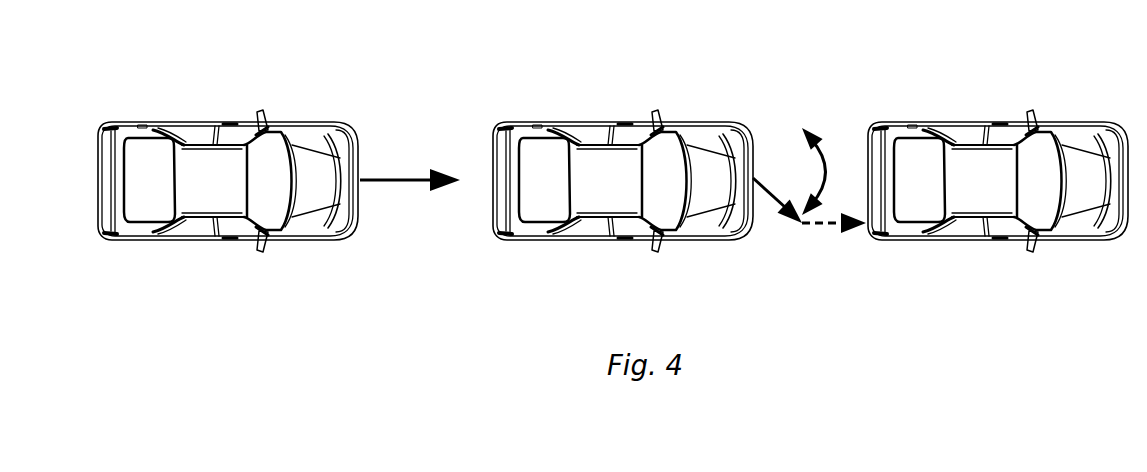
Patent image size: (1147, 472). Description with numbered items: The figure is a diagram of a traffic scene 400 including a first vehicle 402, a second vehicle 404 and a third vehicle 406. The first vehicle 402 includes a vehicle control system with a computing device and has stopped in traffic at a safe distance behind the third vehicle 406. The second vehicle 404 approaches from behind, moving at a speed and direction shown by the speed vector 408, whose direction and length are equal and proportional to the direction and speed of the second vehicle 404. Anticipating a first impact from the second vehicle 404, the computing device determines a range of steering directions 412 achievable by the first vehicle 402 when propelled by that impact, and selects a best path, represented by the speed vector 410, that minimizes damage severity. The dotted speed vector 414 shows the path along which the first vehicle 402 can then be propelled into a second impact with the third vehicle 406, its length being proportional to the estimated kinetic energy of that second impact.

The traffic scene 400 is at (663, 23).
The first vehicle 402 is at (593, 120).
The second vehicle 404 is at (207, 118).
The third vehicle 406 is at (967, 120).
The speed vector 408 is at (420, 182).
The speed vector 410 is at (768, 197).
The range of steering directions 412 is at (813, 168).
The dotted speed vector 414 is at (830, 225).